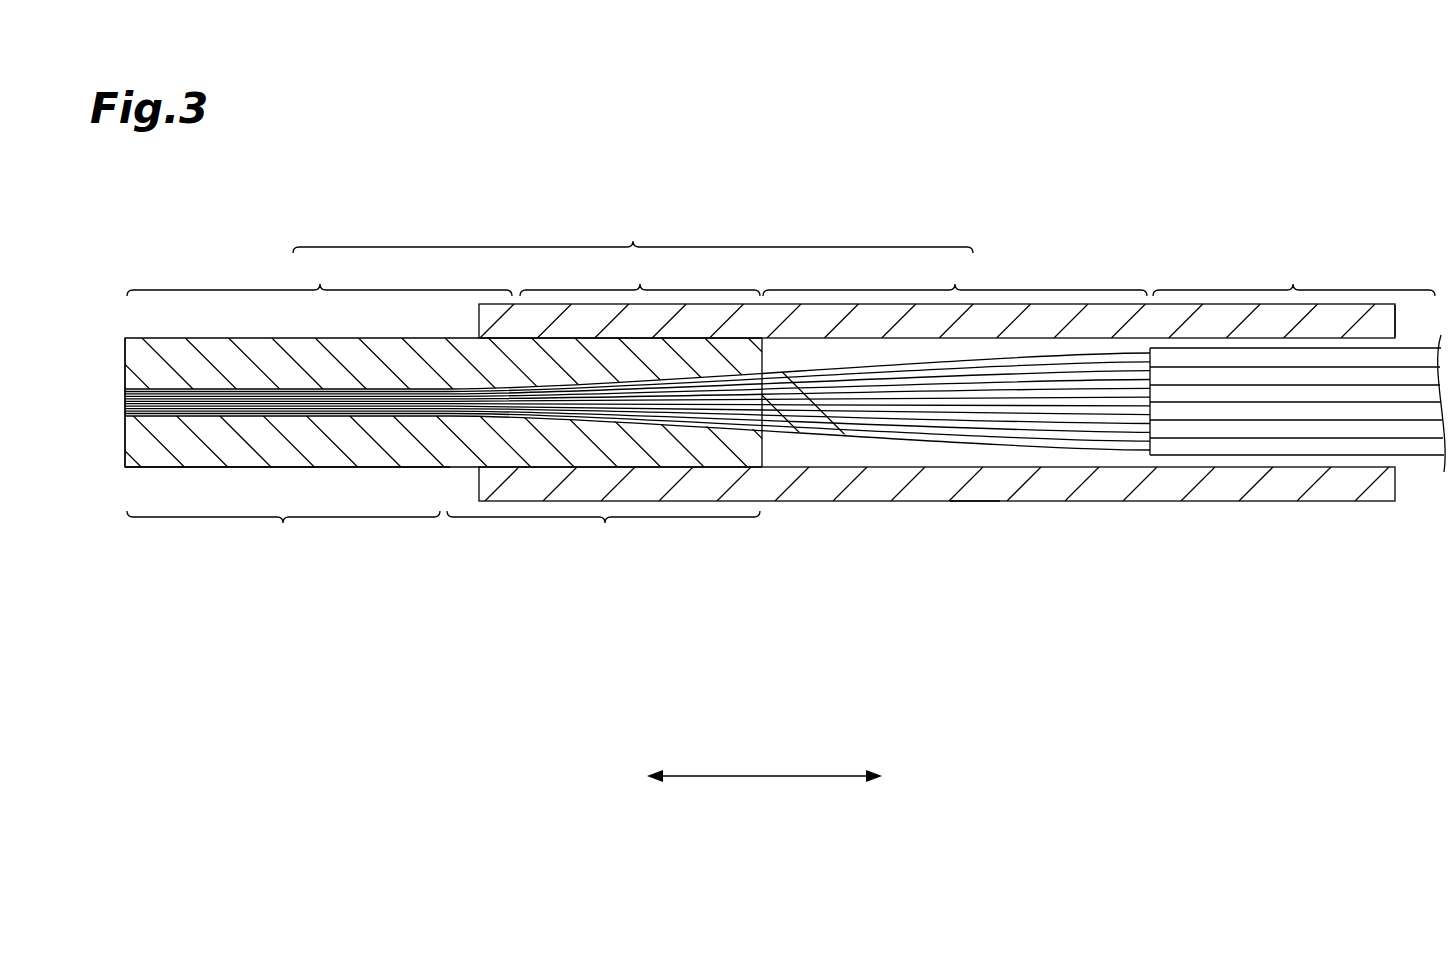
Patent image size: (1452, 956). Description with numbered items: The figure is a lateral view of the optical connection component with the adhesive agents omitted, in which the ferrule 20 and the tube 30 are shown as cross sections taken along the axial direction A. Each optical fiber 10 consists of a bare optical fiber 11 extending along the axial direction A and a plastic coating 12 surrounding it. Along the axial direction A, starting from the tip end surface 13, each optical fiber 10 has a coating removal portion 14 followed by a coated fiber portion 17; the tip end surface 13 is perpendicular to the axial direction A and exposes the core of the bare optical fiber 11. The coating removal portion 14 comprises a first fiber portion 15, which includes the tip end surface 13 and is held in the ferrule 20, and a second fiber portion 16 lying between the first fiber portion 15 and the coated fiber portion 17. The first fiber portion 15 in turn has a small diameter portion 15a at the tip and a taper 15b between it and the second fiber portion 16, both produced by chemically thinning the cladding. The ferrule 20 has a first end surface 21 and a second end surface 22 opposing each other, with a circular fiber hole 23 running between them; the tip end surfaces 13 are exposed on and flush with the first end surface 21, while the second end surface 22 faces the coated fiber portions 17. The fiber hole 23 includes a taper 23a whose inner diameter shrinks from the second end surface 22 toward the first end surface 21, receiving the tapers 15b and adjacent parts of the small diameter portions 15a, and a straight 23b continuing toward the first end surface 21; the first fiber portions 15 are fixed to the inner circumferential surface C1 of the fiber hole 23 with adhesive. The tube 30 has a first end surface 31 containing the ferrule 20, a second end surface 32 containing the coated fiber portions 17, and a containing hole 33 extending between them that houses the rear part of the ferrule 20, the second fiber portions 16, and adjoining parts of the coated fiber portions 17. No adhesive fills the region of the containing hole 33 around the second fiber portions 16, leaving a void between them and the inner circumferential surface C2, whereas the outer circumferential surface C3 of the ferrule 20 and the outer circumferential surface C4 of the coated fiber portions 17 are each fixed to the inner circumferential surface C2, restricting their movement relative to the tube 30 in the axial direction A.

The optical fiber 10 is at (1421, 468).
The bare optical fiber 11 is at (1118, 448).
The plastic coating 12 is at (1341, 449).
The tip end surface 13 is at (125, 397).
The coating removal portion 14 is at (633, 234).
The first fiber portion 15 is at (443, 275).
The small diameter portion 15a is at (319, 276).
The taper 15b is at (640, 275).
The second fiber portion 16 is at (955, 275).
The coated fiber portion 17 is at (1294, 276).
The ferrule 20 is at (135, 474).
The first end surface 21 is at (125, 367).
The second end surface 22 is at (758, 447).
The fiber hole 23 is at (741, 417).
The taper 23a is at (603, 533).
The straight 23b is at (283, 533).
The tube 30 is at (1045, 507).
The first end surface 31 is at (478, 318).
The second end surface 32 is at (1397, 320).
The containing hole 33 is at (978, 455).
The inner circumferential surface C1 is at (752, 433).
The inner circumferential surface C2 is at (953, 466).
The outer circumferential surface C3 is at (722, 468).
The outer circumferential surface C4 is at (1230, 457).
The axial direction A is at (766, 774).